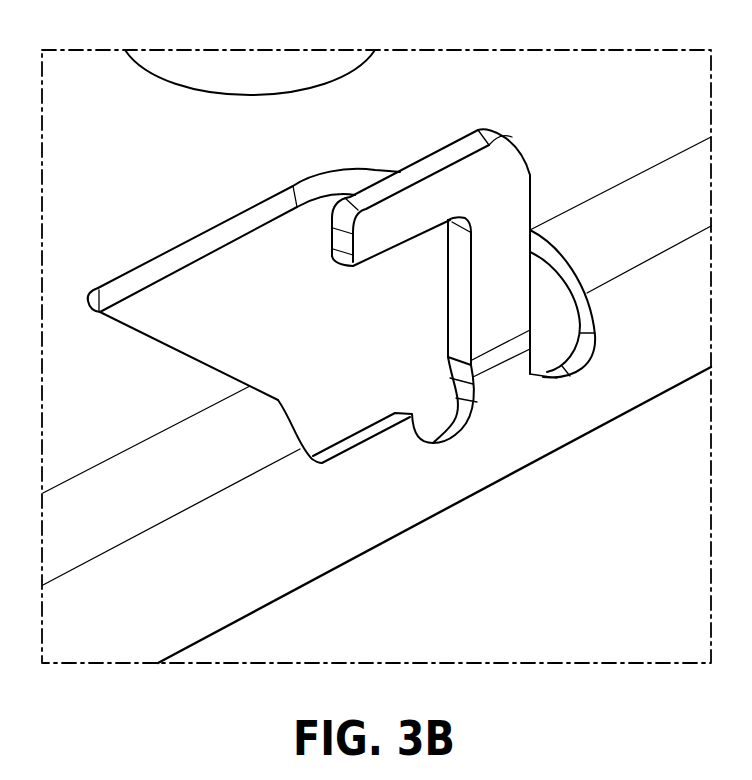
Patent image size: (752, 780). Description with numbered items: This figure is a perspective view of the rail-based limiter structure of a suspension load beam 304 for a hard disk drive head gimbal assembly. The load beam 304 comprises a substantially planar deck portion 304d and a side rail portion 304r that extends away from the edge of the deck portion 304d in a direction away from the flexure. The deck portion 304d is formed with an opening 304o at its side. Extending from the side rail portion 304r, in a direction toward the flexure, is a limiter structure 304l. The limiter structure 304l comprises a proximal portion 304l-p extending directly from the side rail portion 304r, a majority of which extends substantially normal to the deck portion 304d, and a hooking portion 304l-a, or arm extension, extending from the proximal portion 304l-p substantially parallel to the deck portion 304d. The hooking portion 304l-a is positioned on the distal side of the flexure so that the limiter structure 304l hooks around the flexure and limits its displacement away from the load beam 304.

The load beam 304 is at (608, 110).
The deck portion 304d is at (142, 190).
The opening 304o is at (220, 310).
The hooking portion 304l-a is at (450, 220).
The limiter structure 304l is at (493, 392).
The proximal portion 304l-p is at (507, 328).
The side rail portion 304r is at (212, 603).